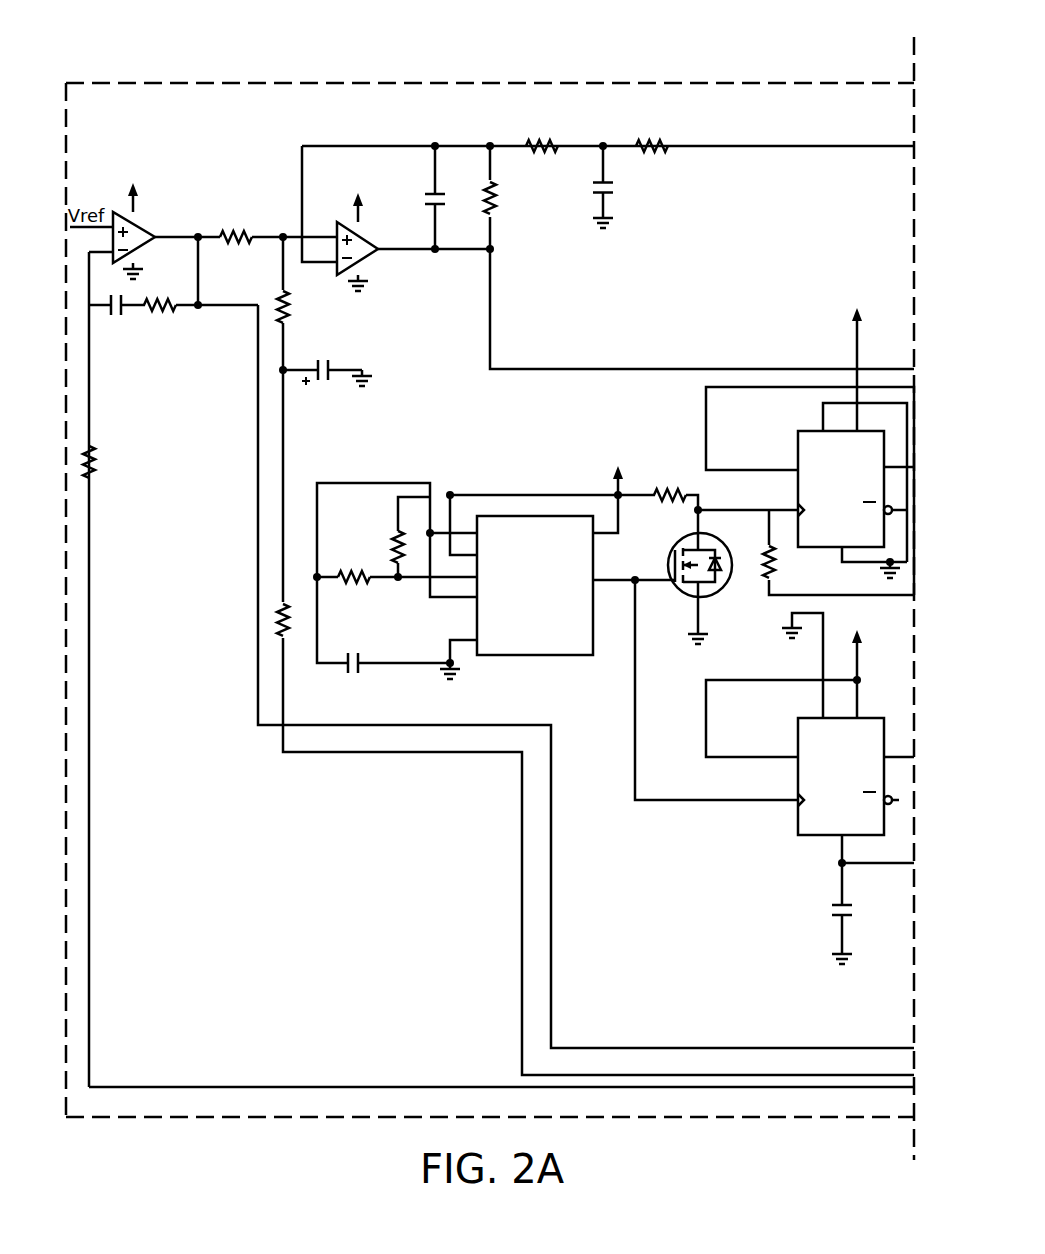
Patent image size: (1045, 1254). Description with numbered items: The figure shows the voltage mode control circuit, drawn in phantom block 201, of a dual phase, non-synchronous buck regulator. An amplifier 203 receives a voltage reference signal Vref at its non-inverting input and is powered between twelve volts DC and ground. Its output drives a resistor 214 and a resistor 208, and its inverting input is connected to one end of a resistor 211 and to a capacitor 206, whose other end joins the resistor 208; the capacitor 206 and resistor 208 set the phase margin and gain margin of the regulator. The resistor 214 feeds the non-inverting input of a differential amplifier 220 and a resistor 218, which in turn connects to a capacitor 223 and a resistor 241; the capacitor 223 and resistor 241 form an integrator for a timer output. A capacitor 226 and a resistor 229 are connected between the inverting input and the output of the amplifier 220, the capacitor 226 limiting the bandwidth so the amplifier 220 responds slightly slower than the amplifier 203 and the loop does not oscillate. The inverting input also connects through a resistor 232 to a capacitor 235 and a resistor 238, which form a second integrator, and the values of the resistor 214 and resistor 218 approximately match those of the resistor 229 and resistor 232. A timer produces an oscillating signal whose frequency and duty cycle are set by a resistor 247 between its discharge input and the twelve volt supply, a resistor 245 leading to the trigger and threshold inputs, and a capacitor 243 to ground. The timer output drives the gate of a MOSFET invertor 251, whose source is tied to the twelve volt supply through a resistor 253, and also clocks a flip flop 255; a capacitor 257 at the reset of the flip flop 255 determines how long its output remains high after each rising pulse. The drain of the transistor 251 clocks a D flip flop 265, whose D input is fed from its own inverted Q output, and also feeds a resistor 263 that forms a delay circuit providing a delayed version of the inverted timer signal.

The voltage mode control circuit 201 is at (808, 82).
The amplifier 203 is at (138, 226).
The capacitor 206 is at (115, 320).
The resistor 208 is at (159, 316).
The resistor 211 is at (99, 465).
The resistor 214 is at (232, 232).
The resistor 218 is at (290, 317).
The differential amplifier 220 is at (365, 263).
The capacitor 223 is at (333, 368).
The capacitor 226 is at (432, 206).
The resistor 229 is at (500, 197).
The resistor 232 is at (547, 141).
The capacitor 235 is at (618, 185).
The resistor 238 is at (657, 141).
The resistor 241 is at (275, 620).
The capacitor 243 is at (532, 515).
The resistor 245 is at (352, 573).
The resistor 247 is at (390, 541).
The invertor 251 is at (686, 596).
The resistor 253 is at (669, 491).
The flip flop 255 is at (798, 820).
The capacitor 257 is at (853, 910).
The resistor 263 is at (766, 585).
The D flip flop 265 is at (797, 443).